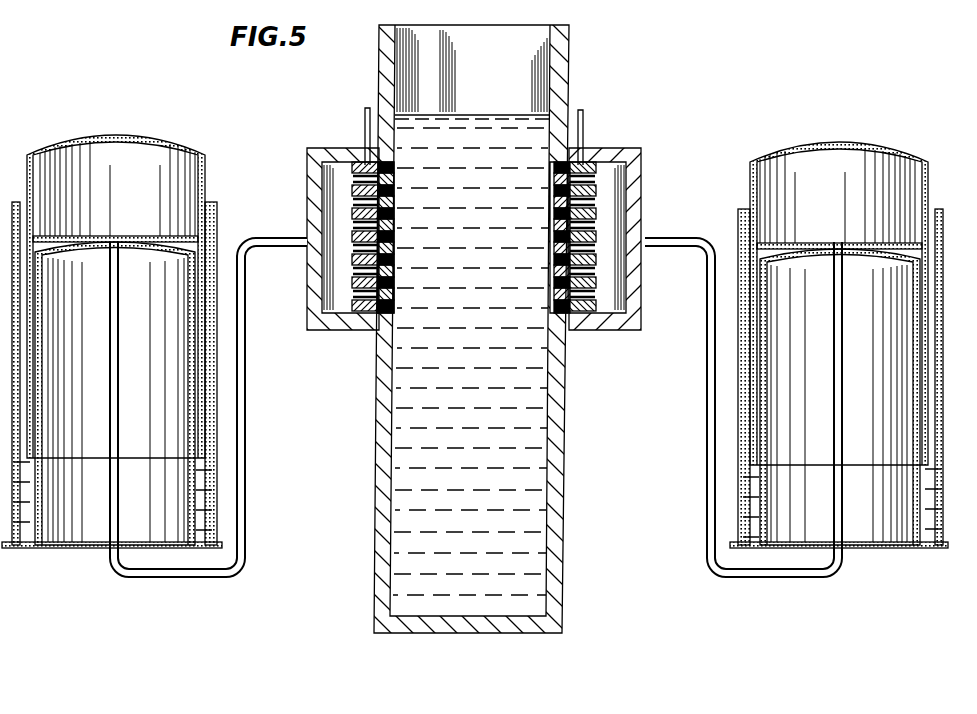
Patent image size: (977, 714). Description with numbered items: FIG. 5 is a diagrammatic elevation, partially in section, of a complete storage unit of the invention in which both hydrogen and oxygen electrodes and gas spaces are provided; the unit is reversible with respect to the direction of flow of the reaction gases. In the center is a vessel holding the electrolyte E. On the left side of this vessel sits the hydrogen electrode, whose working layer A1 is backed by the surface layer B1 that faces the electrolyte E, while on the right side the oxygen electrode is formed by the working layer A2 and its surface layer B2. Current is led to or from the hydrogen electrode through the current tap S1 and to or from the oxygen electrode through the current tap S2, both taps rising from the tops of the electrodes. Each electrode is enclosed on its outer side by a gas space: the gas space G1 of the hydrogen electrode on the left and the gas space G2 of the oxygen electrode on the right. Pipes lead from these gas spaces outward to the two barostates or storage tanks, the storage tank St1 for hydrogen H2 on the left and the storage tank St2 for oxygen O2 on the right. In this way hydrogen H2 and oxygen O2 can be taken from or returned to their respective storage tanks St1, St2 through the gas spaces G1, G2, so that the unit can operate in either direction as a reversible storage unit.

The electrolyte E is at (402, 405).
The gas space of the hydrogen electrode G1 is at (330, 214).
The gas space of the oxygen electrode G2 is at (610, 217).
The working layer of the hydrogen electrode A1 is at (350, 185).
The working layer of the oxygen electrode A2 is at (584, 178).
The surface layer of the hydrogen electrode B1 is at (383, 318).
The surface layer of the oxygen electrode B2 is at (563, 330).
The current tap of the hydrogen electrode S1 is at (366, 117).
The current tap of the oxygen electrode S2 is at (580, 122).
The barostat or storage tank for hydrogen St1 is at (166, 134).
The barostat or storage tank for oxygen St2 is at (879, 149).
The hydrogen H2 is at (135, 210).
The oxygen O2 is at (875, 207).